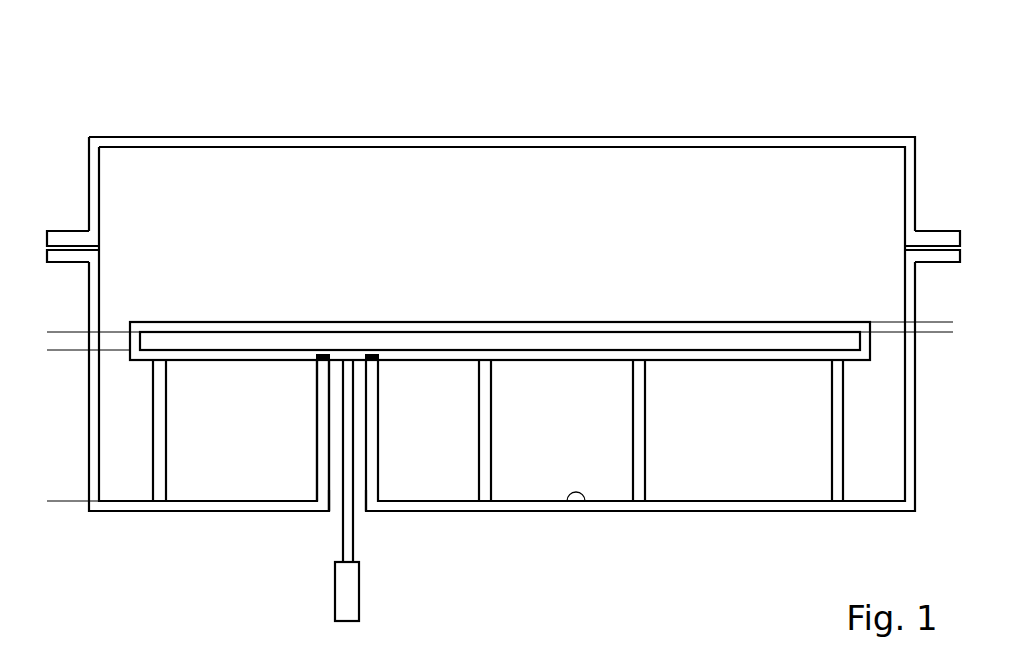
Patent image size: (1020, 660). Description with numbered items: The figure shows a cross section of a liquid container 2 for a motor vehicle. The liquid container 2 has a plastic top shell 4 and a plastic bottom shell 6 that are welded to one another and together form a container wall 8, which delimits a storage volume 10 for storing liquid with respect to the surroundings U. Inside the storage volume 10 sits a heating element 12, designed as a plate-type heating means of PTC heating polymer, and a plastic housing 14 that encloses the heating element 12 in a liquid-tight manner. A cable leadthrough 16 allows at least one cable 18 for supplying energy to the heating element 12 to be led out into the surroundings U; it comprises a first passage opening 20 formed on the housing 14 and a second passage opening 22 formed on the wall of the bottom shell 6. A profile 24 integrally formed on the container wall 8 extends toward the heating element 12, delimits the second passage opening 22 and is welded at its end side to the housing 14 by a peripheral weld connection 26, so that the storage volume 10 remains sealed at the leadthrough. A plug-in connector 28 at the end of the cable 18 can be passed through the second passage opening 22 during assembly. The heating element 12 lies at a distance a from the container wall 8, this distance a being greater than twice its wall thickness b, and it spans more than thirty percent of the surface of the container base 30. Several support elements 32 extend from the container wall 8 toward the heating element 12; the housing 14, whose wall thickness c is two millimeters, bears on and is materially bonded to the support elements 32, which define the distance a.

The liquid container 2 is at (127, 82).
The top shell 4 is at (198, 135).
The bottom shell 6 is at (159, 512).
The container wall 8 is at (197, 505).
The storage volume 10 is at (712, 252).
The heating element 12 is at (290, 338).
The housing 14 is at (434, 328).
The cable leadthrough 16 is at (334, 506).
The cable 18 is at (349, 537).
The first passage opening 20 is at (345, 351).
The second passage opening 22 is at (361, 416).
The profile 24 is at (325, 450).
The weld connection 26 is at (378, 364).
The plug-in connector 28 is at (343, 573).
The container base 30 is at (585, 501).
The support elements 32 is at (160, 470).
The surroundings U is at (731, 111).
The distance a is at (69, 501).
The wall thickness of the heating element b is at (69, 332).
The wall thickness of the housing c is at (943, 292).